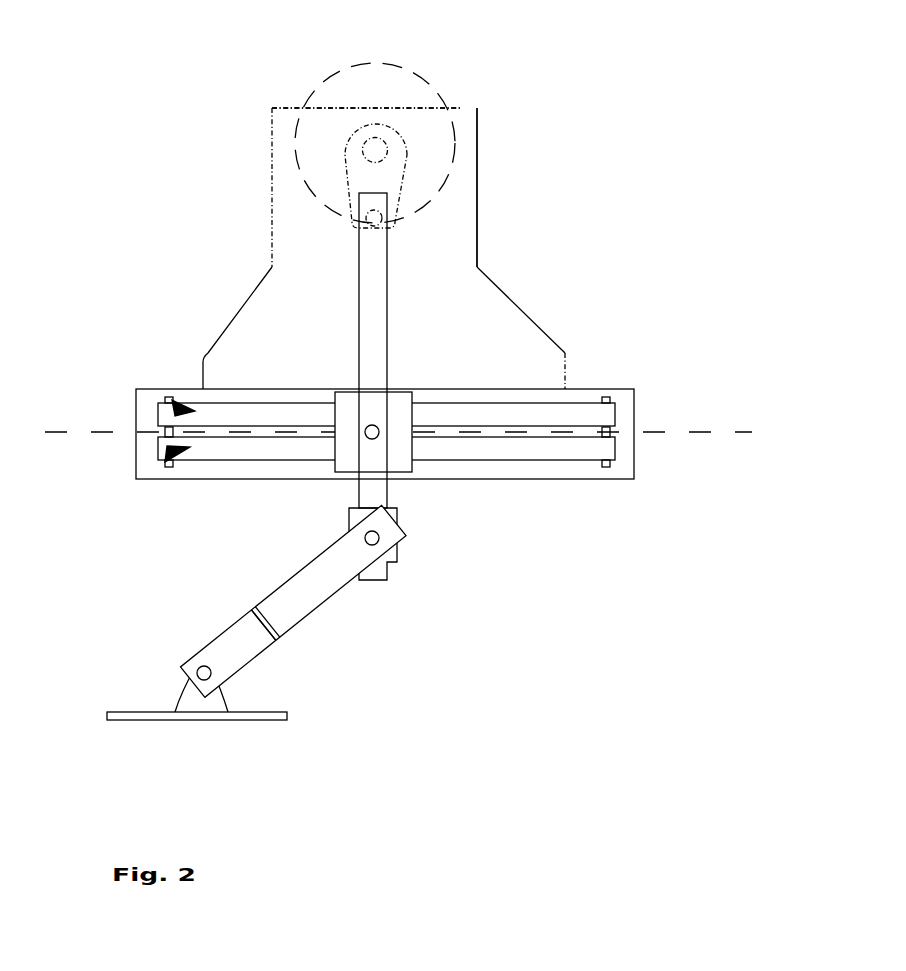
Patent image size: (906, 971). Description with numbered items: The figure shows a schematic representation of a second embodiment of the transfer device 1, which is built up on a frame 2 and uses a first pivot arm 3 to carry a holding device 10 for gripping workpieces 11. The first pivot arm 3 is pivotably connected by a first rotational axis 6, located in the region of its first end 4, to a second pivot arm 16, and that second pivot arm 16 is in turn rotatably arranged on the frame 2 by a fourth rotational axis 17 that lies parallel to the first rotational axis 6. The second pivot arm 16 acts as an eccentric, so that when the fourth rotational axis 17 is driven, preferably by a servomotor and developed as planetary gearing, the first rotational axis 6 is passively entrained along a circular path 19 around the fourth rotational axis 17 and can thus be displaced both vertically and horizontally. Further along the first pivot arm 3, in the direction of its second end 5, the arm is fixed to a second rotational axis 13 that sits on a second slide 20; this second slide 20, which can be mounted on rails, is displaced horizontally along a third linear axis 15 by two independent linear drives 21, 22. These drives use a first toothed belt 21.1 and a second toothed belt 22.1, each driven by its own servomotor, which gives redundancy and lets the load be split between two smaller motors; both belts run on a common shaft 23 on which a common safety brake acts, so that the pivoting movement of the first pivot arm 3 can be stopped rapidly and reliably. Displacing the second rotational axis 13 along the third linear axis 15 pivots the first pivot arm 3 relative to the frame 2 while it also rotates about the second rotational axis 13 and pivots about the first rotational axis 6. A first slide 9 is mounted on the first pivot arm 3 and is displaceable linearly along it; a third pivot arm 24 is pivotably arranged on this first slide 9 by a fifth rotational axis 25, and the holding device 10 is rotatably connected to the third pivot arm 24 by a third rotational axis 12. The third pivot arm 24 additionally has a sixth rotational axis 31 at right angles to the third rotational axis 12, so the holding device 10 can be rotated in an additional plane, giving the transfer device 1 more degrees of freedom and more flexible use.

The transfer device 1 is at (200, 105).
The frame 2 is at (465, 125).
The first pivot arm 3 is at (382, 300).
The first end 4 is at (360, 178).
The second end 5 is at (390, 600).
The first rotational axis 6 is at (384, 217).
The first slide 9 is at (387, 553).
The holding device 10 is at (178, 692).
The workpieces 11 is at (210, 721).
The third rotational axis 12 is at (197, 672).
The second rotational axis 13 is at (365, 432).
The third linear axis 15 is at (697, 436).
The second pivot arm 16 is at (390, 178).
The fourth rotational axis 17 is at (376, 143).
The circular path 19 is at (293, 158).
The second slide 20 is at (345, 467).
The first linear drive 21 is at (163, 402).
The first toothed belt 21.1 is at (600, 417).
The second linear drive 22 is at (163, 457).
The second toothed belt 22.1 is at (600, 452).
The common shaft 23 is at (160, 430).
The third pivot arm 24 is at (325, 602).
The fifth rotational axis 25 is at (380, 539).
The sixth rotational axis 31 is at (272, 634).